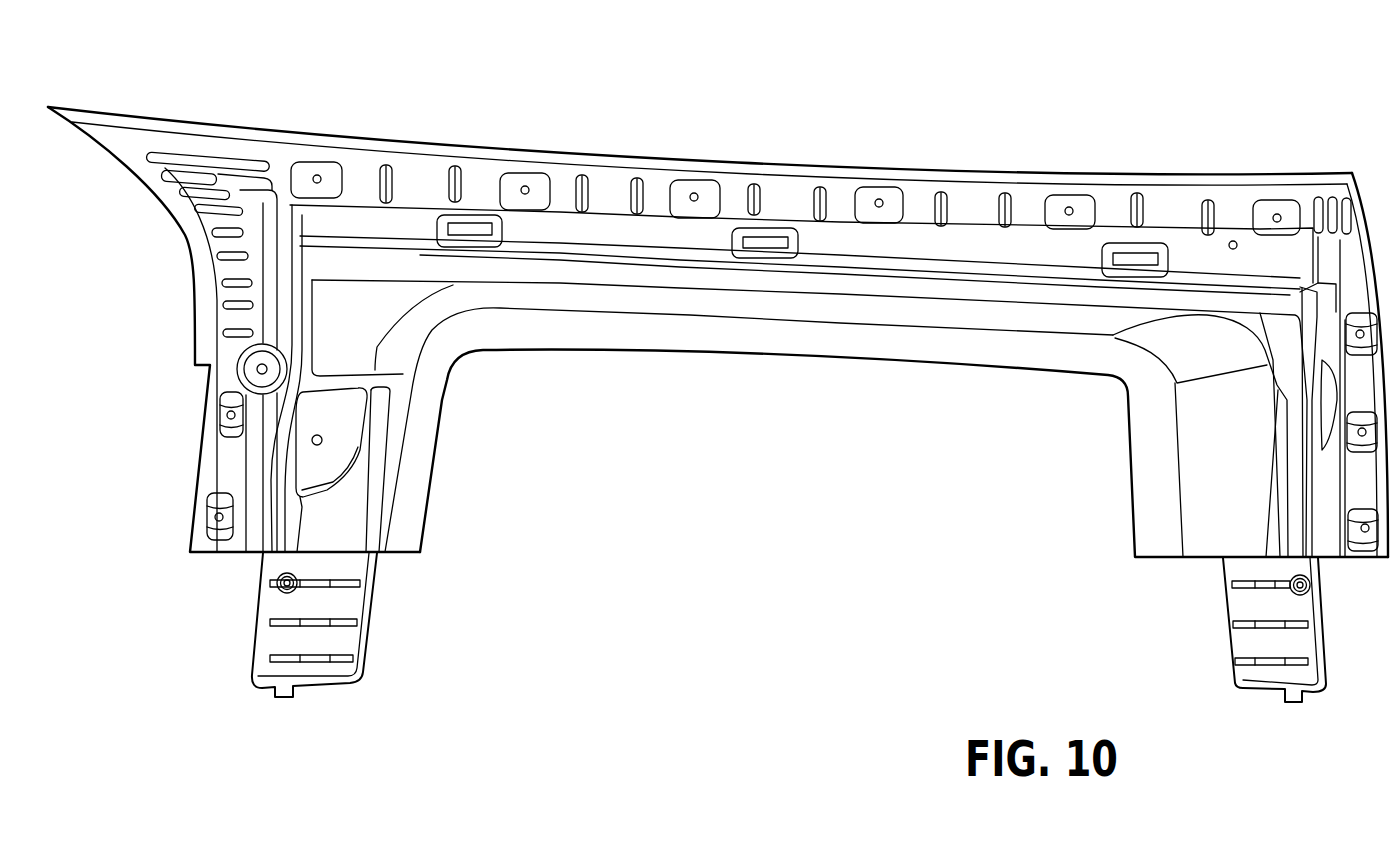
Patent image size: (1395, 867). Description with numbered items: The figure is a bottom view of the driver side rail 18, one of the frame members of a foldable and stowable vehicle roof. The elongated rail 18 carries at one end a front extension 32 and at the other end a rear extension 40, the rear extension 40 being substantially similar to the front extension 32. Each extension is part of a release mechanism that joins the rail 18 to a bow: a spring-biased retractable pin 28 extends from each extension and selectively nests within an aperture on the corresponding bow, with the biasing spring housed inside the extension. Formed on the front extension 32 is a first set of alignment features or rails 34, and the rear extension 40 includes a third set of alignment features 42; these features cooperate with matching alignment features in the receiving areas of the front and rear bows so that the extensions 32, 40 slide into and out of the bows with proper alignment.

The driver side rail 18 is at (775, 335).
The retractable pin 28 is at (278, 590).
The front extension 32 is at (267, 639).
The first set of alignment features 34 is at (342, 658).
The rear extension 40 is at (1323, 687).
The third set of alignment features 42 is at (1267, 672).